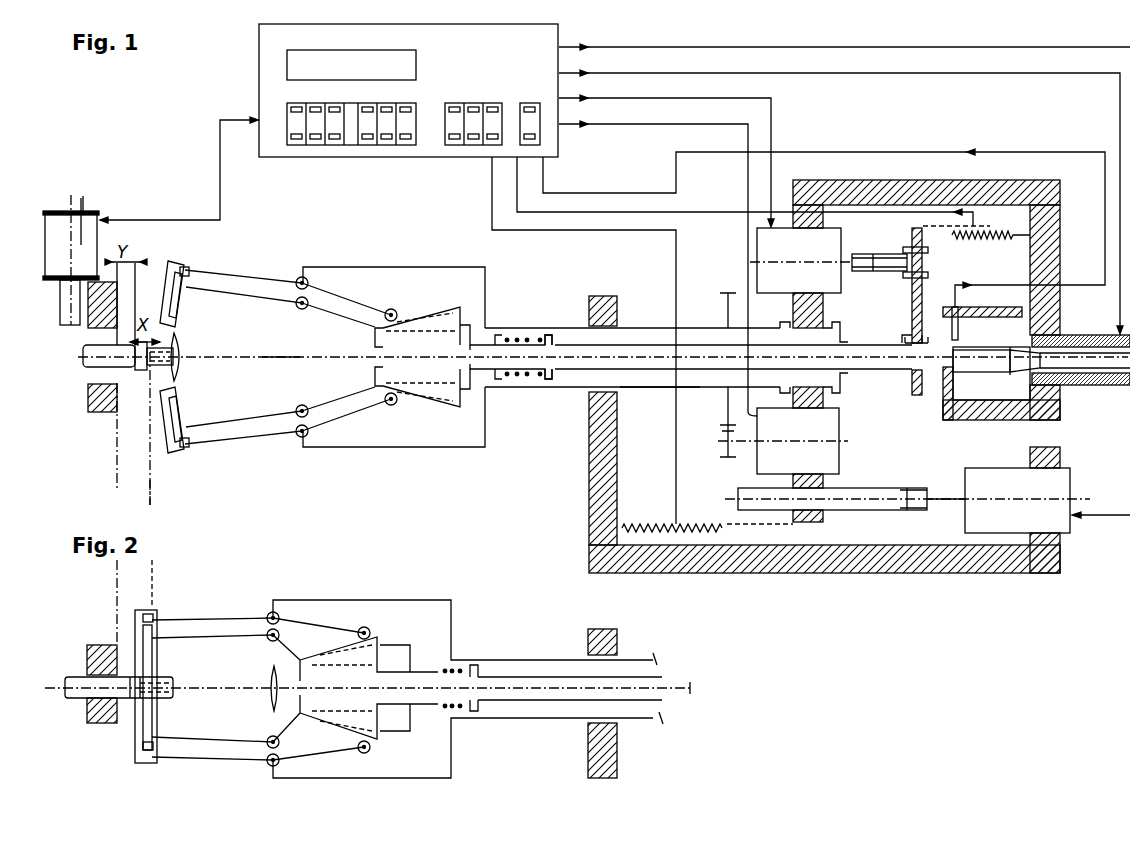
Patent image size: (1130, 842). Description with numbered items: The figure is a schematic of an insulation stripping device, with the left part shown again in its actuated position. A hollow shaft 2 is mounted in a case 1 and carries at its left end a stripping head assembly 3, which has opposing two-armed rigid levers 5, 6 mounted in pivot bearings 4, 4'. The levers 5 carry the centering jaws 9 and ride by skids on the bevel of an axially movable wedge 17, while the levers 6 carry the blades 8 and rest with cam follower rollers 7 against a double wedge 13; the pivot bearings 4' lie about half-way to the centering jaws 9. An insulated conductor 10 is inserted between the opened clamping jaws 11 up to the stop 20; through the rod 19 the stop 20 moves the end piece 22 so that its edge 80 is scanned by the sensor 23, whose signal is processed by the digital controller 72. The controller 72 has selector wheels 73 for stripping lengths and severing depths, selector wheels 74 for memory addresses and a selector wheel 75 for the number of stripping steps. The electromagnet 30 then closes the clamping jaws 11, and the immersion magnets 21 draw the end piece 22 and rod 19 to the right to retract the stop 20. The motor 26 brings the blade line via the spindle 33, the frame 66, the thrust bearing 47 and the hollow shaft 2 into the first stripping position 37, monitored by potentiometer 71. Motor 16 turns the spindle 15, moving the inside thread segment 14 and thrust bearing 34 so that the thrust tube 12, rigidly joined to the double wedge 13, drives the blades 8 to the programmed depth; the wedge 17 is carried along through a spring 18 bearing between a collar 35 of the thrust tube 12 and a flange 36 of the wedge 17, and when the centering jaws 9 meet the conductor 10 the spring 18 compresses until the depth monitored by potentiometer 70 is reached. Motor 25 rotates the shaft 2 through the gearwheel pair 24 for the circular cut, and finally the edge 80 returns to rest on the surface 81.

In FIG. 1, the case 1 is at (592, 296).
In FIG. 2, the case 1 is at (590, 645).
In FIG. 1, the hollow shaft 2 is at (648, 328).
In FIG. 1, the stripping head assembly 3 is at (447, 262).
In FIG. 1, the pivot bearing 4 is at (311, 357).
In FIG. 1, the pivot bearing 4' is at (291, 358).
In FIG. 1, the lever 5 is at (249, 276).
In FIG. 2, the lever 5 is at (228, 618).
In FIG. 1, the lever 6 is at (262, 294).
In FIG. 2, the lever 6 is at (225, 738).
In FIG. 1, the cam follower roller 7 is at (384, 318).
In FIG. 1, the blade 8 is at (181, 300).
In FIG. 2, the blade 8 is at (158, 665).
In FIG. 1, the centering jaw 9 is at (167, 264).
In FIG. 2, the centering jaw 9 is at (146, 614).
In FIG. 1, the conductor 10 is at (120, 368).
In FIG. 2, the conductor 10 is at (172, 698).
In FIG. 1, the clamping jaw 11 is at (100, 312).
In FIG. 2, the clamping jaw 11 is at (95, 664).
In FIG. 1, the thrust tube 12 is at (655, 388).
In FIG. 1, the double wedge 13 is at (432, 408).
In FIG. 1, the inside thread segment 14 is at (908, 286).
In FIG. 1, the spindle 15 is at (868, 272).
In FIG. 1, the motor 16 is at (832, 242).
In FIG. 1, the wedge 17 is at (472, 326).
In FIG. 2, the wedge 17 is at (397, 653).
In FIG. 1, the spring 18 is at (518, 378).
In FIG. 2, the spring 18 is at (458, 665).
In FIG. 1, the rod 19 is at (262, 357).
In FIG. 1, the stop 20 is at (183, 345).
In FIG. 2, the stop 20 is at (265, 695).
In FIG. 1, the immersion magnet 21 is at (1106, 388).
In FIG. 1, the end piece 22 is at (997, 360).
In FIG. 1, the sensor 23 is at (959, 328).
In FIG. 1, the gearwheel pair 24 is at (716, 402).
In FIG. 1, the motor 25 is at (826, 458).
In FIG. 1, the motor 26 is at (1058, 487).
In FIG. 1, the electromagnet 30 is at (80, 214).
In FIG. 1, the spindle 33 is at (912, 510).
In FIG. 1, the thrust bearing 34 is at (913, 396).
In FIG. 1, the collar 35 is at (556, 382).
In FIG. 1, the flange 36 is at (492, 375).
In FIG. 1, the first stripping position 37 is at (152, 492).
In FIG. 1, the thrust bearing 47 is at (838, 382).
In FIG. 1, the frame 66 is at (1055, 198).
In FIG. 1, the potentiometer 70 is at (1005, 238).
In FIG. 1, the potentiometer 71 is at (666, 524).
In FIG. 1, the digital controller 72 is at (254, 96).
In FIG. 1, the selector wheels 73 is at (340, 150).
In FIG. 1, the selector wheels 74 is at (472, 150).
In FIG. 1, the selector wheel 75 is at (542, 132).
In FIG. 1, the edge 80 is at (953, 345).
In FIG. 1, the surface 81 is at (950, 372).